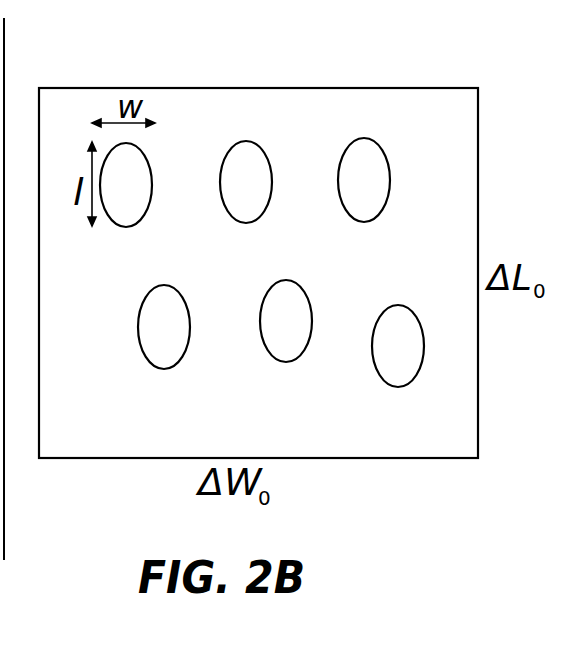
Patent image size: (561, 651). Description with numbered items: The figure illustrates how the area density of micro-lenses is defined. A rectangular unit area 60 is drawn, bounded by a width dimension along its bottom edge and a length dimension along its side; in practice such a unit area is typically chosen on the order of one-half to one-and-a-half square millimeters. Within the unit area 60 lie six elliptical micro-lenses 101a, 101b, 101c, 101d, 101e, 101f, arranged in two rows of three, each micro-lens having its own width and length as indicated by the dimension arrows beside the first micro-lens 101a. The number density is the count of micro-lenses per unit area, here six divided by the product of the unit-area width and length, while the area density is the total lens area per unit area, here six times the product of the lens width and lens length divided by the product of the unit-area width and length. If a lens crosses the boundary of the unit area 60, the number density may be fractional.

The unit area 60 is at (235, 102).
The micro-lens 101a is at (100, 175).
The micro-lens 101b is at (248, 150).
The micro-lens 101c is at (367, 147).
The micro-lens 101d is at (148, 337).
The micro-lens 101e is at (273, 302).
The micro-lens 101f is at (395, 312).